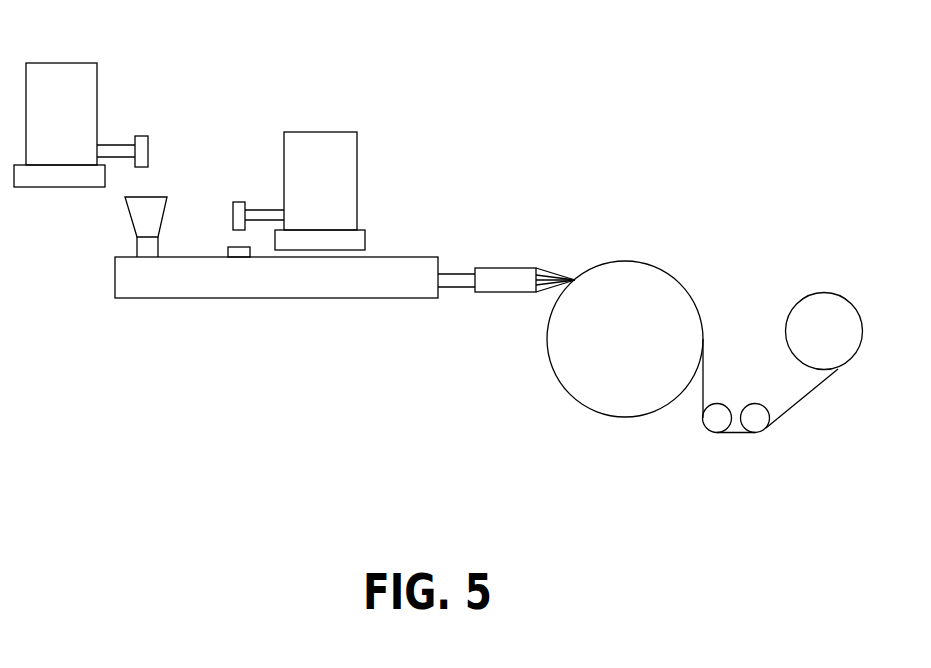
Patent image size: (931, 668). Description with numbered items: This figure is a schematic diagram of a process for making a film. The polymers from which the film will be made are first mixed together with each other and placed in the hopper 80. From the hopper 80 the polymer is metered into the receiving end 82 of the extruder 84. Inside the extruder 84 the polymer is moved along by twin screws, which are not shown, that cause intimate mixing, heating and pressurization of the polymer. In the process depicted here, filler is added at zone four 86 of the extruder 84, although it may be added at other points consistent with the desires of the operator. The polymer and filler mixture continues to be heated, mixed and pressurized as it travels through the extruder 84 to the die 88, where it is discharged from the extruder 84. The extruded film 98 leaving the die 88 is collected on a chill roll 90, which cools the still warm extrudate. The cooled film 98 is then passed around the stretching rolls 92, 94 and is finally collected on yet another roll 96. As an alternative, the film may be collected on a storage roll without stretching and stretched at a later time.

The hopper 80 is at (92, 78).
The receiving end 82 is at (140, 225).
The extruder 84 is at (235, 287).
The zone 4 86 is at (317, 278).
The die 88 is at (543, 265).
The chill roll 90 is at (578, 390).
The stretching roll 92 is at (715, 422).
The stretching roll 94 is at (762, 422).
The roll 96 is at (829, 305).
The film 98 is at (808, 397).